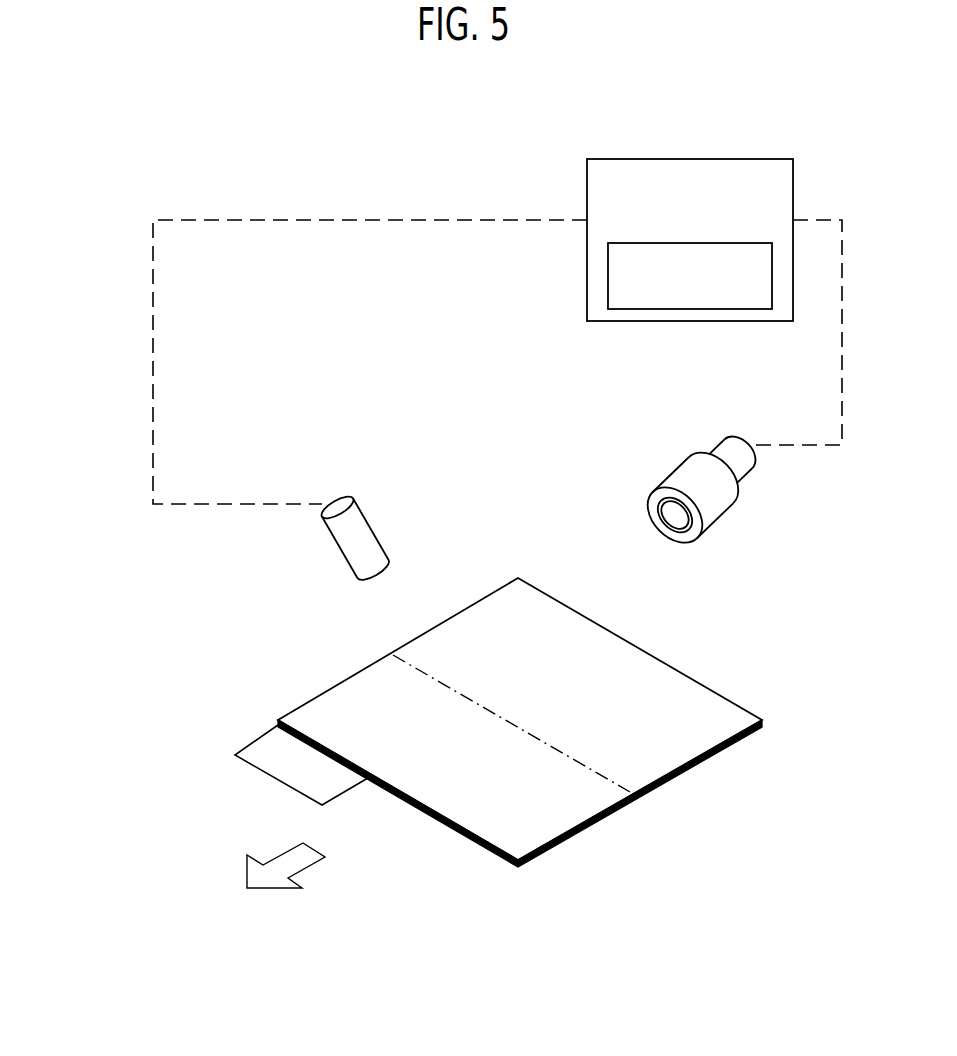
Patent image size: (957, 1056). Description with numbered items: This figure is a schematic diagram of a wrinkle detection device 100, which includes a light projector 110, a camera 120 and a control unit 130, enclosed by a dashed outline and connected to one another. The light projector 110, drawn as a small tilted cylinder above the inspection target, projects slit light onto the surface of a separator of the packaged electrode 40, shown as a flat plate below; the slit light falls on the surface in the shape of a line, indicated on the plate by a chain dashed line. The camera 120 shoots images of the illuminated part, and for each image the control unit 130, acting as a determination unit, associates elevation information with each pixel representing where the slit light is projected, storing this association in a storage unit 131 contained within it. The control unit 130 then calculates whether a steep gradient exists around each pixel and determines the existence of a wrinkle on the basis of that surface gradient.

The wrinkle detection device 100 is at (118, 222).
The light projector 110 is at (357, 535).
The camera 120 is at (717, 453).
The control unit 130 is at (732, 159).
The storage unit 131 is at (722, 309).
The packaged electrode 40 is at (332, 710).